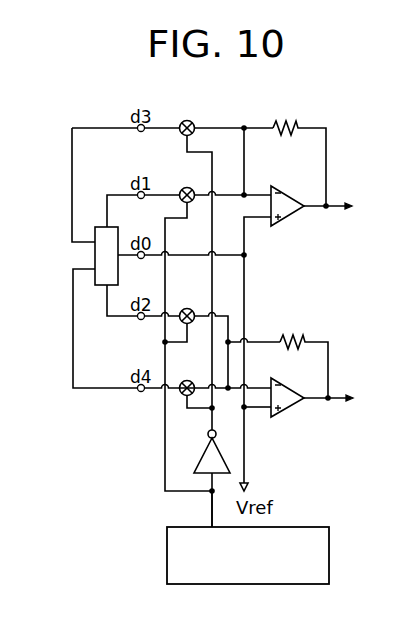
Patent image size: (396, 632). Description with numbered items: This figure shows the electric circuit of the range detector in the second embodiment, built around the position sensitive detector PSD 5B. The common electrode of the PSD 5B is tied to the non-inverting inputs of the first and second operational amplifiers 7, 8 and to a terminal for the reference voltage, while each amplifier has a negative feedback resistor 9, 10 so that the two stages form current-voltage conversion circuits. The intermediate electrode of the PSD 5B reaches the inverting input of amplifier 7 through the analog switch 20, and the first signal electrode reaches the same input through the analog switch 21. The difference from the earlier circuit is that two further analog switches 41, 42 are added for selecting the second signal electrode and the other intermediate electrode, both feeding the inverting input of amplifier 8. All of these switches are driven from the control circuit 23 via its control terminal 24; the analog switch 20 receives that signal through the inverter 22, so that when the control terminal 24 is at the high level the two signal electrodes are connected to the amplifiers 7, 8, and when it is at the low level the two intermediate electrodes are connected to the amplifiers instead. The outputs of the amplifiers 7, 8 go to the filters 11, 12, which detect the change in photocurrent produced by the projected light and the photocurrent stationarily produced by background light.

The PSD 5B is at (97, 258).
The analog switch 20 is at (187, 120).
The analog switch 21 is at (187, 188).
The analog switch 41 is at (187, 308).
The analog switch 42 is at (188, 380).
The inverter 22 is at (209, 457).
The resistor 9 is at (284, 134).
The resistor 10 is at (282, 349).
The first operational amplifier 7 is at (296, 212).
The second operational amplifier 8 is at (290, 402).
The filter 11 is at (369, 206).
The filter 12 is at (375, 399).
The control circuit 23 is at (297, 577).
The control terminal 24 is at (212, 527).